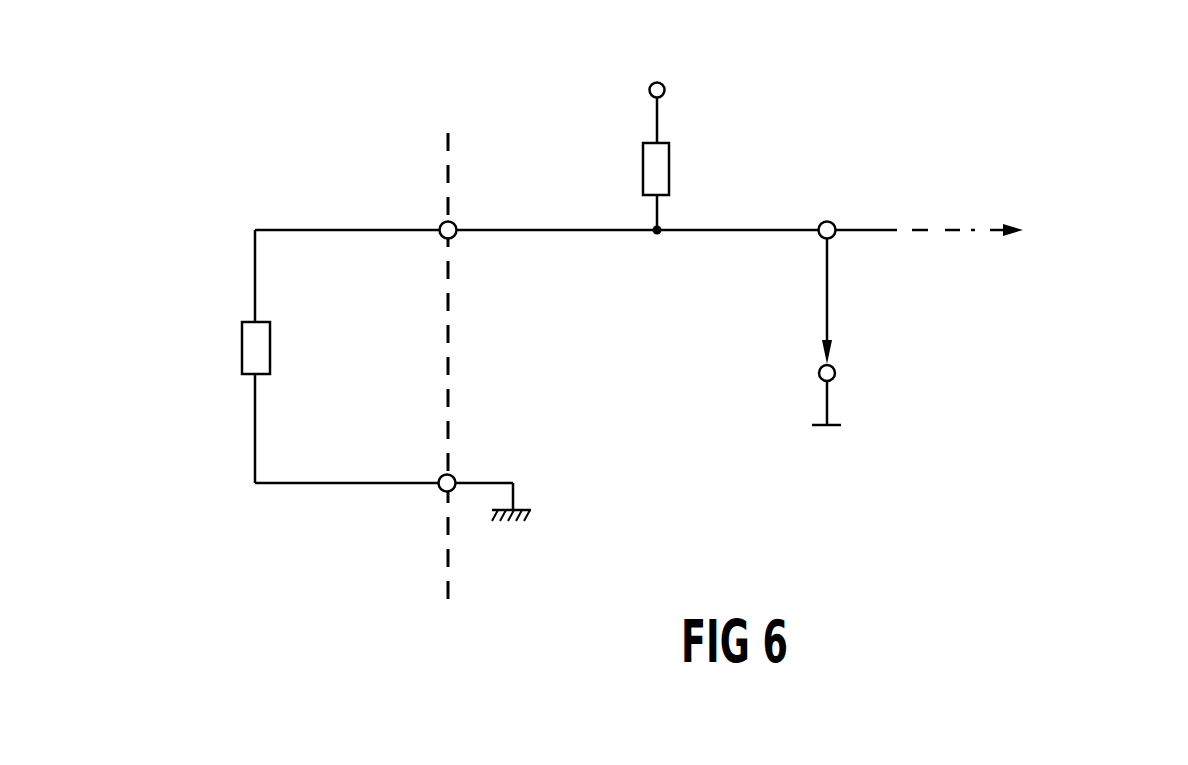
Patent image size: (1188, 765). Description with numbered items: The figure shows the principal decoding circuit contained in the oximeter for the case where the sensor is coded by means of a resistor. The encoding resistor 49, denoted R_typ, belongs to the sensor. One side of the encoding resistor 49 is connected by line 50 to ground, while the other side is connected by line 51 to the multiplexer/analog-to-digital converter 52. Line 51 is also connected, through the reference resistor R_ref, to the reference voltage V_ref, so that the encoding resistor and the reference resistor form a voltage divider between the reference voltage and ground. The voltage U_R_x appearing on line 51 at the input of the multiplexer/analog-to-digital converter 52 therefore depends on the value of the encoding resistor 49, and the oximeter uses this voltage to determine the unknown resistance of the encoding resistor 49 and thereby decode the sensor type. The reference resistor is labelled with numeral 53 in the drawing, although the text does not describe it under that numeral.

The encoding resistor 49 is at (241, 346).
The line 50 is at (472, 483).
The line 51 is at (333, 230).
The multiplexer/analog-to-digital converter 52 is at (868, 231).
The reference resistor R_ref 53 is at (643, 155).